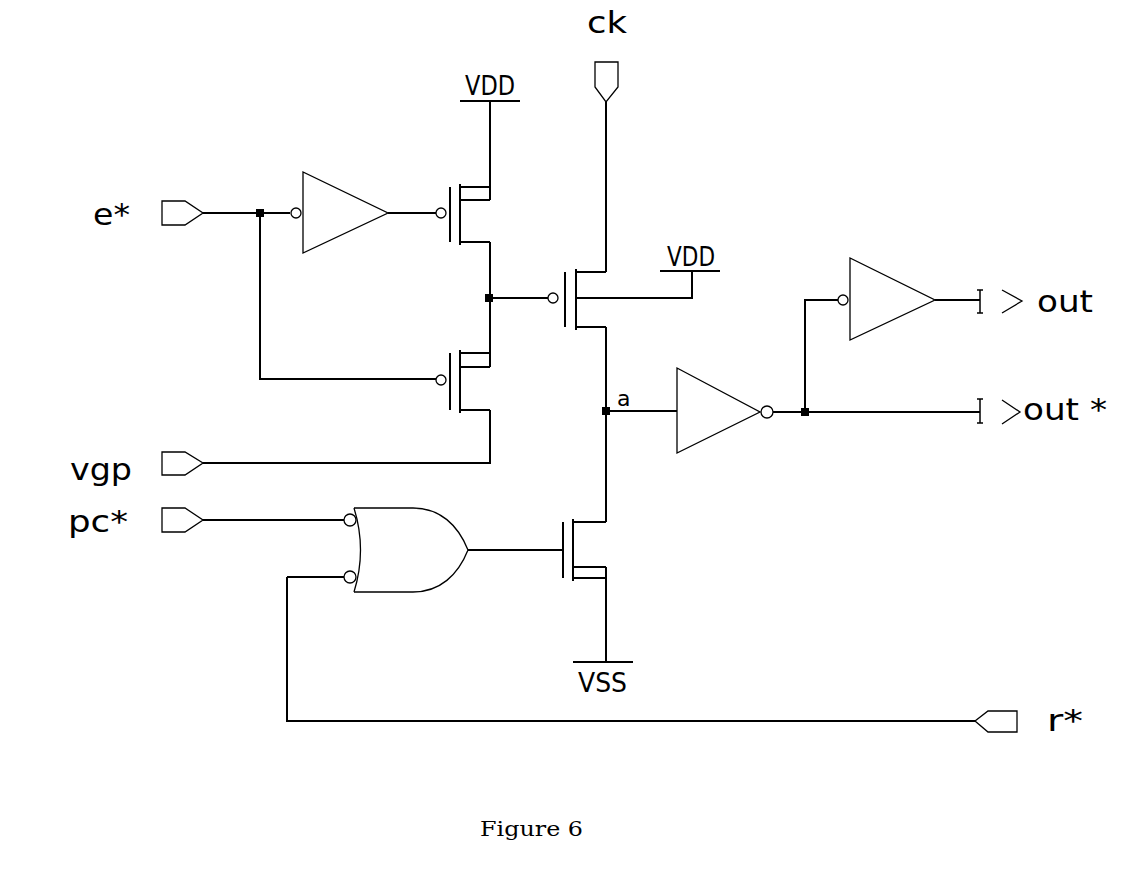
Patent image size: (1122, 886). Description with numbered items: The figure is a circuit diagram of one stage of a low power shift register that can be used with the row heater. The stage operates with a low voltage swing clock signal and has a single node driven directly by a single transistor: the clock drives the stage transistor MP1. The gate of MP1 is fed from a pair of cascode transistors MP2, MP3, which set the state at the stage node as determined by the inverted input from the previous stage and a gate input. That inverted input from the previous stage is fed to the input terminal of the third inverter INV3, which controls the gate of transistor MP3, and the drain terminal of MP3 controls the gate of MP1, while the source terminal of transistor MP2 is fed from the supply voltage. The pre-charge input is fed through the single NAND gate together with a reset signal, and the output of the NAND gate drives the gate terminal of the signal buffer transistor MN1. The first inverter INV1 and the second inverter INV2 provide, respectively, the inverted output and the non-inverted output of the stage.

The first inverter INV1 is at (725, 397).
The second inverter INV2 is at (909, 286).
The inverter INV3 is at (363, 199).
The stage transistor MP1 is at (618, 280).
The cascode transistor MP2 is at (460, 194).
The cascode transistor MP3 is at (460, 361).
The signal buffer transistor MN1 is at (574, 530).
The NAND gate NAND is at (406, 567).